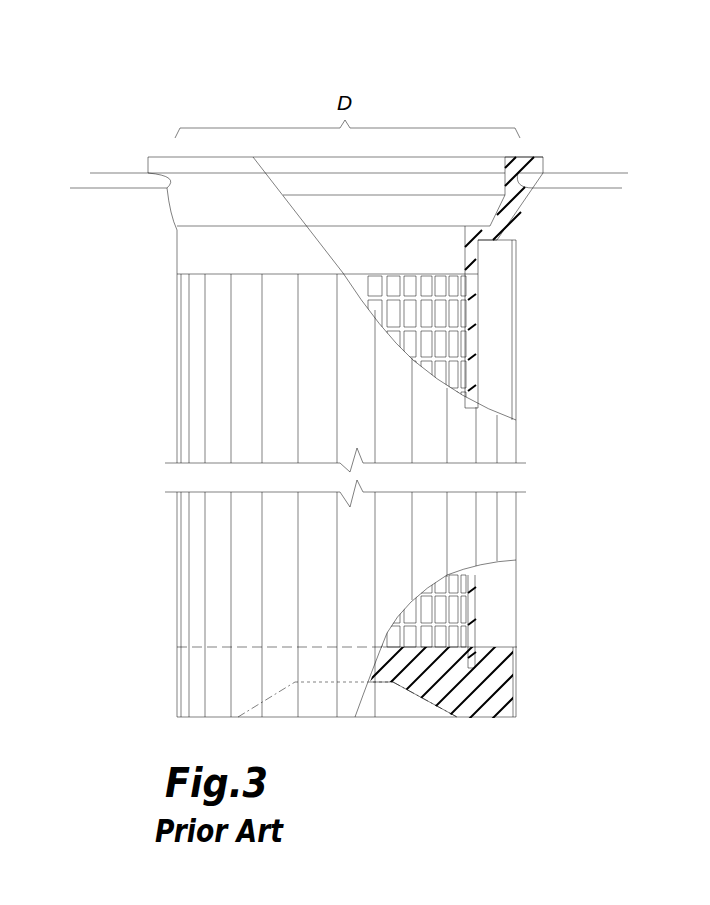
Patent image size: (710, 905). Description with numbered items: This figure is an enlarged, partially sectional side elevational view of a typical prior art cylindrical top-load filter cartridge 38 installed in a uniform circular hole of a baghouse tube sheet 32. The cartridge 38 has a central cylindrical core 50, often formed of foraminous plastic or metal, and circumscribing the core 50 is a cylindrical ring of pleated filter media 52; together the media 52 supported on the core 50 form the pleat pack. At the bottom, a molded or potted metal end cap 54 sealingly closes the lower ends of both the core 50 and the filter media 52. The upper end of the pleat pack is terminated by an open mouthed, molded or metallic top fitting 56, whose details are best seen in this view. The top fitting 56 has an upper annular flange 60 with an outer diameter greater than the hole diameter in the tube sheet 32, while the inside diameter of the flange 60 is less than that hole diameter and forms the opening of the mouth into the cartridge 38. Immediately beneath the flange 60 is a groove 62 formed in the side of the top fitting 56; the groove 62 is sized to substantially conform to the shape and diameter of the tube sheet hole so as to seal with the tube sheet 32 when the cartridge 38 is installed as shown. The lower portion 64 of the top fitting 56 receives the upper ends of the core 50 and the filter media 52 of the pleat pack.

The filter cartridge 38 is at (192, 83).
The upper annular flange 60 is at (160, 162).
The tube sheet 32 is at (118, 182).
The groove 62 is at (547, 188).
The top fitting 56 is at (535, 148).
The lower portion 64 is at (522, 215).
The pleated filter media 52 is at (198, 348).
The central cylindrical core 50 is at (448, 345).
The end cap 54 is at (488, 692).